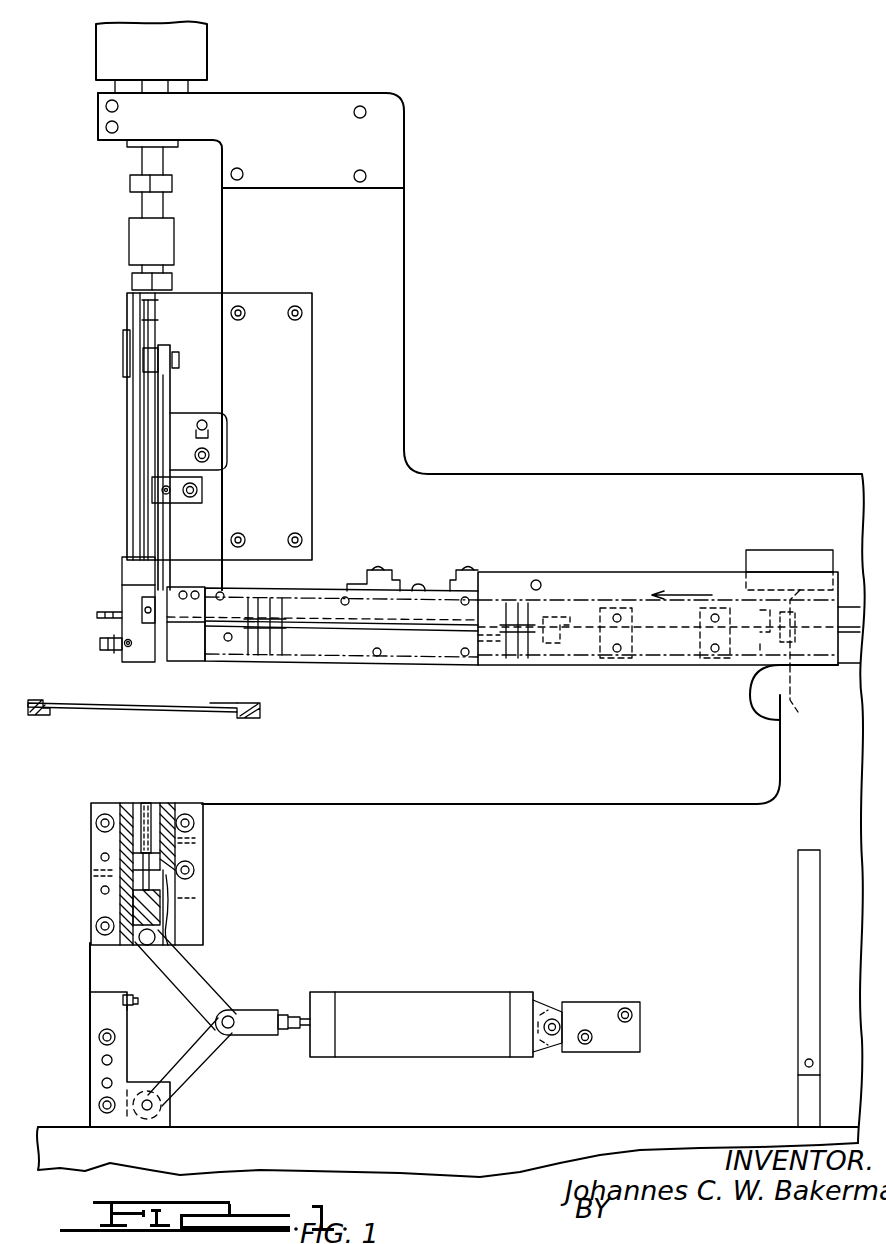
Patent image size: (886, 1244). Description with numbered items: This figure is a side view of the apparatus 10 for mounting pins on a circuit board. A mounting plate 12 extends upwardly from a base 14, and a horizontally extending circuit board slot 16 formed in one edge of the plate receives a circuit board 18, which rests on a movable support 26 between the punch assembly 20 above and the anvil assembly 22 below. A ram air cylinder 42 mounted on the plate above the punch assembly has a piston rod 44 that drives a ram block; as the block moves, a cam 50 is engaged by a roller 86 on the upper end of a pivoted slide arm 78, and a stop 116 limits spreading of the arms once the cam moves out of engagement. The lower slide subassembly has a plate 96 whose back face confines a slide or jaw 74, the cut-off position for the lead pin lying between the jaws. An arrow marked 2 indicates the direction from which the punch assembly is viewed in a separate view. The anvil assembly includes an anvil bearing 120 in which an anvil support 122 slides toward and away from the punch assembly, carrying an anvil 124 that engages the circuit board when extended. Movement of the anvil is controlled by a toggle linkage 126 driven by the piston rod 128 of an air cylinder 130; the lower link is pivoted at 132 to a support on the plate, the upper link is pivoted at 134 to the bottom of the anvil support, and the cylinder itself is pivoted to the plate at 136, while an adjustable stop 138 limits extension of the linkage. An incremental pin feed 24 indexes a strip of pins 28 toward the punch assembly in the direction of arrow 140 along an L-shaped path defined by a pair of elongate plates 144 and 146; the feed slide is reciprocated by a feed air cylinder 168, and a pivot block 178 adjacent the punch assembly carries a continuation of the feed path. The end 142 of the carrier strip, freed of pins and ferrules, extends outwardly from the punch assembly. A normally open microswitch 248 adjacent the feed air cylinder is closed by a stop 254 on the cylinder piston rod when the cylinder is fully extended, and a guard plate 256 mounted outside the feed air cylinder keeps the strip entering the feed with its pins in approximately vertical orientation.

The apparatus 10 is at (474, 200).
The mounting plate 12 is at (450, 474).
The base 14 is at (425, 1127).
The circuit board slot 16 is at (265, 804).
The circuit board 18 is at (210, 703).
The punch assembly 20 is at (94, 299).
The anvil assembly 22 is at (77, 887).
The incremental pin feed 24 is at (551, 564).
The movable support 26 is at (262, 712).
The strip of pins 28 is at (512, 660).
The section line 2 is at (98, 448).
The ram air cylinder 42 is at (207, 24).
The piston rod 44 is at (165, 276).
The cam 50 is at (147, 335).
The slide or jaw 74 is at (148, 612).
The slide arm 78 is at (165, 388).
The roller or cam follower 86 is at (148, 357).
The plate 96 is at (135, 655).
The stop 116 is at (165, 490).
The anvil bearing 120 is at (172, 835).
The anvil support 122 is at (172, 912).
The anvil 124 is at (147, 803).
The toggle linkage 126 is at (233, 996).
The piston rod 128 is at (294, 1018).
The air cylinder 130 is at (432, 1000).
The pivot 132 is at (155, 1105).
The pivot 134 is at (140, 942).
The pivot 136 is at (557, 1020).
The adjustable stop 138 is at (134, 1008).
The arrow 140 is at (680, 600).
The end of carrier strip 142 is at (100, 625).
The elongate plate 144 is at (352, 660).
The elongate plate 146 is at (322, 612).
The feed air cylinder 168 is at (641, 607).
The pivot block 178 is at (172, 661).
The normally open microswitch 248 is at (785, 550).
The stop 254 is at (816, 661).
The guard plate 256 is at (572, 592).